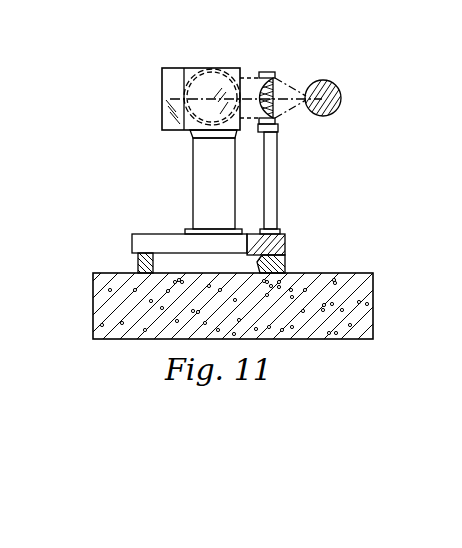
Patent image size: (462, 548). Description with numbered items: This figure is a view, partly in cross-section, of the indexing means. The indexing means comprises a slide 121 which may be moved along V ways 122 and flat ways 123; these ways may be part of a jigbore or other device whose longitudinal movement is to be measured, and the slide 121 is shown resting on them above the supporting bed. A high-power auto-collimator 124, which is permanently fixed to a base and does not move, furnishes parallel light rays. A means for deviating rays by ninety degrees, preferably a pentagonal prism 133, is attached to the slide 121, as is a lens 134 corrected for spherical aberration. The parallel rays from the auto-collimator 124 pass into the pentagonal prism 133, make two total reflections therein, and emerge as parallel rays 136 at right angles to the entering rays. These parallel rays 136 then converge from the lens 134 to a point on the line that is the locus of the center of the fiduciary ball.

The slide 121 is at (132, 244).
The V ways 122 is at (285, 264).
The flat ways 123 is at (138, 258).
The auto-collimator 124 is at (196, 68).
The pentagonal prism 133 is at (162, 113).
The lens 134 is at (266, 72).
The parallel rays 136 is at (339, 86).